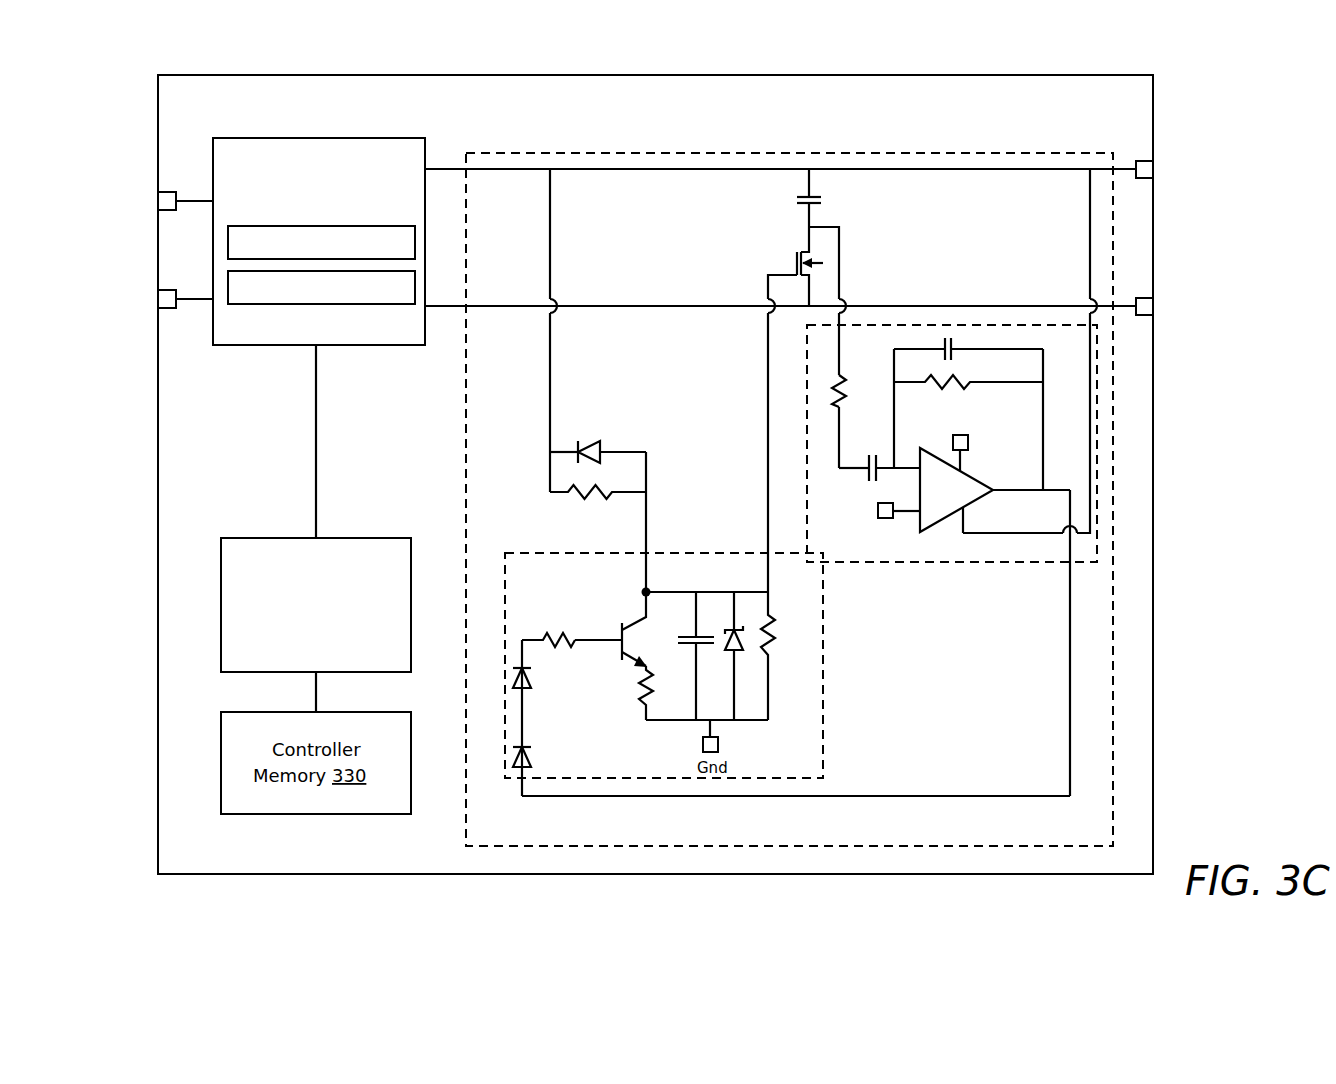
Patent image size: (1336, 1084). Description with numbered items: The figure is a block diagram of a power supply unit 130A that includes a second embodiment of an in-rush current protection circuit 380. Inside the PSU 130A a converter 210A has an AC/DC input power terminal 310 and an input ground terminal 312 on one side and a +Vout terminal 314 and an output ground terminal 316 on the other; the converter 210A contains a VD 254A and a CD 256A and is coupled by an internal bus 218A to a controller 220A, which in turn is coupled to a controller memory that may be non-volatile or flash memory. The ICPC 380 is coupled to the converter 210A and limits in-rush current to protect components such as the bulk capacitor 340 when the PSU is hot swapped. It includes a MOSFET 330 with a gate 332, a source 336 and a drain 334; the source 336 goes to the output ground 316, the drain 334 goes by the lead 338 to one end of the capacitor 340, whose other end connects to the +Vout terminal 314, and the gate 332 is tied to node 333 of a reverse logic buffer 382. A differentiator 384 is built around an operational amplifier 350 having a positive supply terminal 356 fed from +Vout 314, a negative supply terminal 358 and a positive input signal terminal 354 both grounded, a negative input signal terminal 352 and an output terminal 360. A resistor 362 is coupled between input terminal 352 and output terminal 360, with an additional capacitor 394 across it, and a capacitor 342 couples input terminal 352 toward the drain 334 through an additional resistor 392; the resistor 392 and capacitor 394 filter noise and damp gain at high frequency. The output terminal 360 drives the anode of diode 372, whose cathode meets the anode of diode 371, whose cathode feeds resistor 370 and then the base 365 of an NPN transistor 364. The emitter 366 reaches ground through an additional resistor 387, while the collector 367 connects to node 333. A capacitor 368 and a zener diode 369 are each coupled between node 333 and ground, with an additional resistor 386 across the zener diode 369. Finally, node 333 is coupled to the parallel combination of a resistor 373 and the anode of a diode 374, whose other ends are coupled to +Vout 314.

The power supply unit 130A is at (655, 474).
The converter 210A is at (319, 241).
The VD 254A is at (321, 242).
The CD 256A is at (321, 287).
The AC/DC input power terminal 310 is at (135, 201).
The input ground terminal 312 is at (135, 299).
The +Vout terminal 314 is at (1191, 170).
The output ground terminal 316 is at (1185, 307).
The internal bus 218A is at (252, 441).
The controller 220A is at (316, 605).
The MOSFET 330 is at (812, 257).
The in-rush current protection circuit 380 is at (789, 481).
The differentiator 384 is at (952, 469).
The reverse logic buffer 382 is at (714, 665).
The diode 374 is at (607, 427).
The resistor 373 is at (559, 513).
The bulk capacitor 340 is at (860, 198).
The drain 334 is at (751, 226).
The source 336 is at (857, 288).
The gate 332 is at (738, 272).
The drain connection line 338 is at (892, 236).
The node 333 is at (649, 589).
The additional resistor 392 is at (845, 377).
The capacitor 342 is at (870, 453).
The additional capacitor 394 is at (953, 358).
The resistor 362 is at (968, 393).
The positive supply terminal 356 is at (1030, 413).
The operational amplifier 350 is at (965, 502).
The negative input signal terminal 352 is at (908, 466).
The negative supply terminal 358 is at (979, 443).
The positive input signal terminal 354 is at (890, 524).
The output terminal 360 is at (1016, 511).
The NPN transistor 364 is at (586, 628).
The collector 367 is at (646, 608).
The emitter 366 is at (645, 661).
The base 365 is at (589, 642).
The resistor 370 is at (550, 657).
The additional resistor 387 is at (652, 686).
The capacitor 368 is at (685, 632).
The zener diode 369 is at (736, 631).
The additional resistor 386 is at (777, 648).
The diode 371 is at (532, 685).
The diode 372 is at (533, 763).